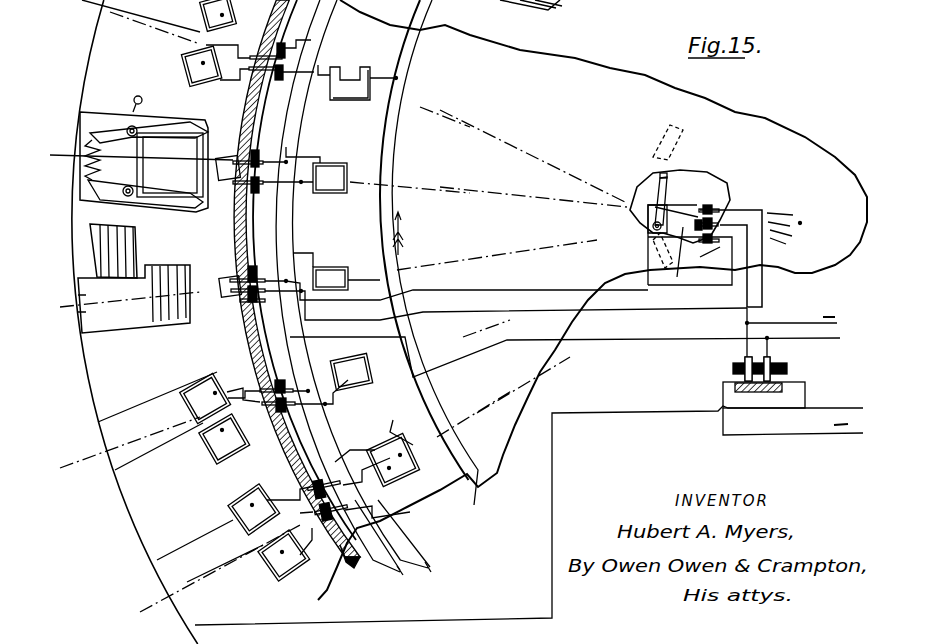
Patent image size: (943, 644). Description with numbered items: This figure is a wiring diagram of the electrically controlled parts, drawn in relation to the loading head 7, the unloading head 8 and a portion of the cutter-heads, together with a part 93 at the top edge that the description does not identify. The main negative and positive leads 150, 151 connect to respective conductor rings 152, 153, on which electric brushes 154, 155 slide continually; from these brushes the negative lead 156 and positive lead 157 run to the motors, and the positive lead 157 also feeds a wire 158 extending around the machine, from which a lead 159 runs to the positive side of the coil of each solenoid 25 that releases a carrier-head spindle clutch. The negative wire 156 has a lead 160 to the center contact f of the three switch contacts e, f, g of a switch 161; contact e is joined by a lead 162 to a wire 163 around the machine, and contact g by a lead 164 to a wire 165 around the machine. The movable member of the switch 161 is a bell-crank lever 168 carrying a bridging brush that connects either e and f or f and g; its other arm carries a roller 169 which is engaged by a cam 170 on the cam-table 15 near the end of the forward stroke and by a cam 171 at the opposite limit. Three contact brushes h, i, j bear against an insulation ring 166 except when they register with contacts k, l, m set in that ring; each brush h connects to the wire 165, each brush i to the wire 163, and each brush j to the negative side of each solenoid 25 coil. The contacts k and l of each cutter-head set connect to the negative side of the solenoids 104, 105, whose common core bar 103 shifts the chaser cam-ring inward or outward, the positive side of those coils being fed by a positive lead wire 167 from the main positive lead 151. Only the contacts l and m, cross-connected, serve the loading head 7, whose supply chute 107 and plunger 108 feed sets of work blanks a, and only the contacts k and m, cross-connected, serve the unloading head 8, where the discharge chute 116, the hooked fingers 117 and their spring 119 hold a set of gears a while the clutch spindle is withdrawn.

The loading-head 7 is at (120, 333).
The unloading head 8 is at (137, 97).
The cam-table 15 is at (592, 300).
The solenoid 25 is at (355, 70).
The rail 93 is at (507, 6).
The common core bar 103 is at (384, 484).
The solenoid 104 is at (198, 75).
The solenoid 105 is at (210, 378).
The supply chute 107 is at (90, 256).
The plunger 108 is at (130, 299).
The discharge chute 116 is at (141, 161).
The hooked fingers 117 is at (178, 132).
The spring 119 is at (88, 146).
The main negative lead 150 is at (828, 436).
The main positive lead 151 is at (476, 611).
The conductor ring 152 is at (735, 381).
The conductor ring 153 is at (778, 383).
The electric brush 154 is at (745, 362).
The electric brush 155 is at (770, 366).
The negative lead 156 is at (800, 323).
The positive lead 157 is at (831, 336).
The wire 158 is at (382, 128).
The lead 159 is at (369, 232).
The lead 160 is at (747, 255).
The switch 161 is at (697, 220).
The lead 162 is at (553, 290).
The wire 163 is at (302, 138).
The lead 164 is at (620, 335).
The wire 165 is at (288, 120).
The insulation ring 166 is at (240, 231).
The positive lead wire 167 is at (84, 76).
The bell-crank lever 168 is at (690, 258).
The roller 169 is at (682, 170).
The cam 170 is at (684, 139).
The cam 171 is at (653, 253).
The work blanks a is at (122, 255).
The switch contact e is at (707, 237).
The switch contact f is at (712, 228).
The switch contact g is at (710, 207).
The contact brush h is at (255, 194).
The contact brush i is at (262, 172).
The contact brush j is at (257, 152).
The contact k is at (252, 70).
The contact l is at (260, 52).
The contact m is at (240, 158).